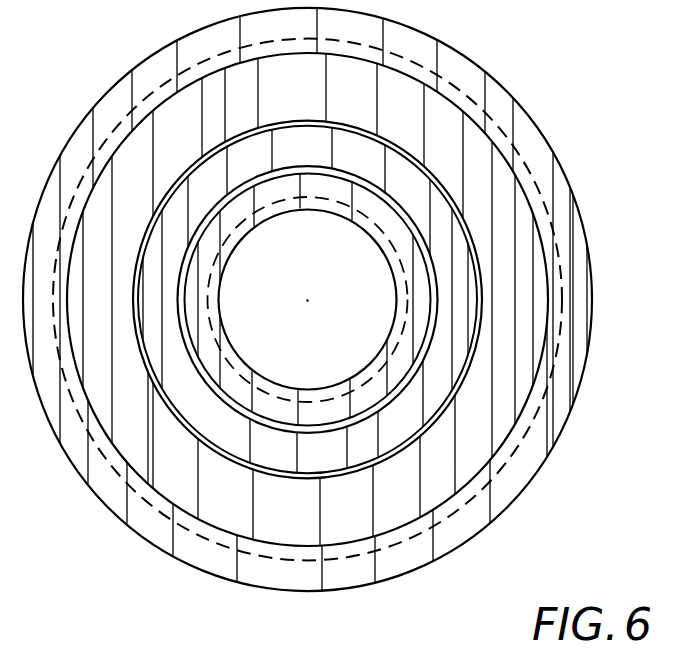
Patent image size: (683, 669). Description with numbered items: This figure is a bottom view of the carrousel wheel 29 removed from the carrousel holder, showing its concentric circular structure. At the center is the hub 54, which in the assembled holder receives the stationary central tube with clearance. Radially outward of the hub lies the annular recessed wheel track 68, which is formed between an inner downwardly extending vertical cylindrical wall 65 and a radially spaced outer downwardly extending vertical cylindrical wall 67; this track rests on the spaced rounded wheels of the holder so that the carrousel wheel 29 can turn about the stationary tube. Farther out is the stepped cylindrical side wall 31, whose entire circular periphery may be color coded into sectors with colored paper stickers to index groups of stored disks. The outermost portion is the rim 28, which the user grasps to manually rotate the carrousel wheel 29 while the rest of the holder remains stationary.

The rim 28 is at (340, 573).
The carrousel wheel 29 is at (487, 178).
The stepped cylindrical side wall 31 is at (525, 435).
The hub 54 is at (373, 227).
The inner downwardly extending vertical cylindrical wall 65 is at (375, 412).
The outer downwardly extending vertical cylindrical wall 67 is at (258, 477).
The annular recessed wheel track 68 is at (462, 310).